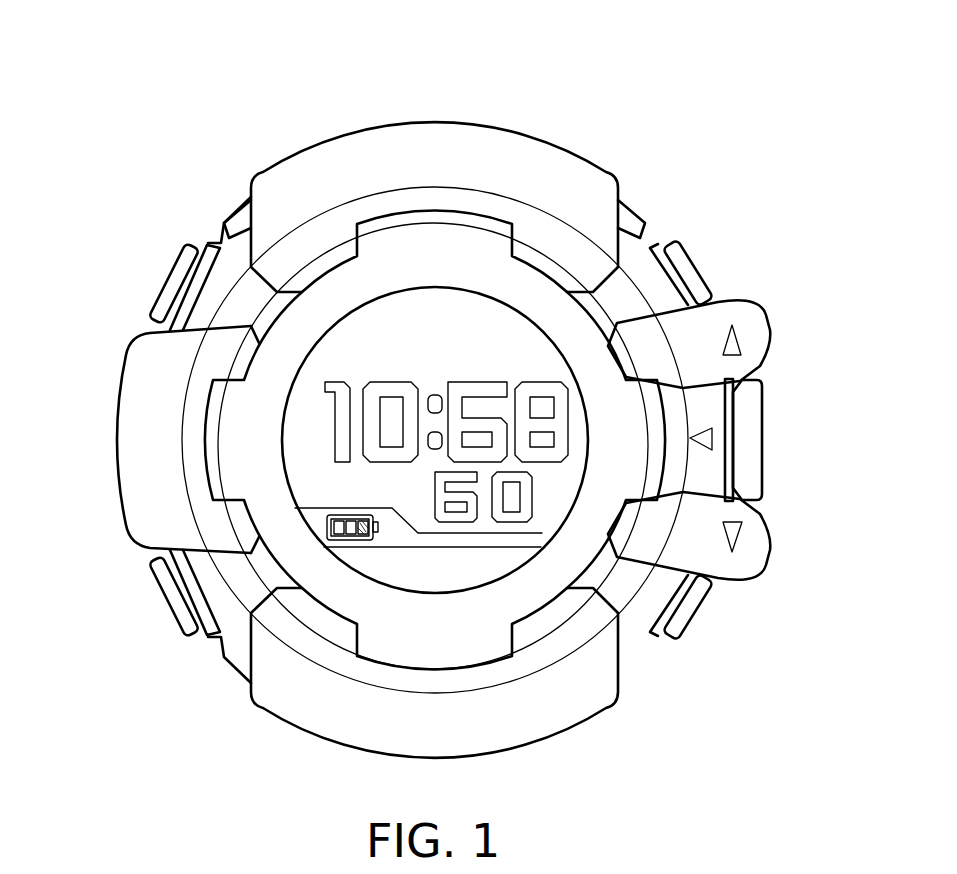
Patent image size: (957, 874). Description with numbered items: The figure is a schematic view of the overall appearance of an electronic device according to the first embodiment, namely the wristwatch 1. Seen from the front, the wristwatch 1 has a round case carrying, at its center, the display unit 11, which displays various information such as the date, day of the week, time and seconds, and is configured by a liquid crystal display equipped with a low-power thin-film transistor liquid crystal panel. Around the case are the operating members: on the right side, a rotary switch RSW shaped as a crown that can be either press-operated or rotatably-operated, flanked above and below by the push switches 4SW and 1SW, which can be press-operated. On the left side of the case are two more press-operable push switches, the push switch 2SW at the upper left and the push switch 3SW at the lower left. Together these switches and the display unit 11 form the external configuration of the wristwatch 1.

The wristwatch 1 is at (440, 105).
The display unit 11 is at (513, 330).
The push switch 2SW is at (173, 282).
The push switch 3SW is at (175, 600).
The push switch 4SW is at (692, 282).
The push switch 1SW is at (692, 597).
The rotary switch RSW is at (752, 440).